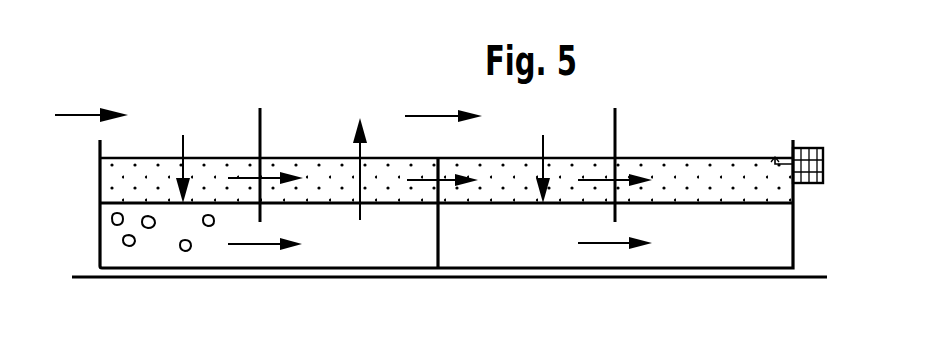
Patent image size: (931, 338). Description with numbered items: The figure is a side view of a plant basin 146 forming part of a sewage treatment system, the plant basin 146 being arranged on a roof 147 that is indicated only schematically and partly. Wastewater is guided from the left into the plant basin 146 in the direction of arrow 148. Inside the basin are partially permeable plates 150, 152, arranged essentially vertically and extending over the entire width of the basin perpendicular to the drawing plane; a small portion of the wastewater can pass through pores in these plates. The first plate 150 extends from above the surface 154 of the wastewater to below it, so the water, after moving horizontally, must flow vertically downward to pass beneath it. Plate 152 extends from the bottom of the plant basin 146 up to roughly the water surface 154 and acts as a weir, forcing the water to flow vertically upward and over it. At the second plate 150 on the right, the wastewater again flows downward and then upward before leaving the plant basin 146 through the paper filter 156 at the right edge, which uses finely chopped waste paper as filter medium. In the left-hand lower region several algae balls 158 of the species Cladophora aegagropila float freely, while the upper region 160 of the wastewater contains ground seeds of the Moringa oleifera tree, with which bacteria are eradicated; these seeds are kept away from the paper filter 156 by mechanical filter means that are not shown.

The plant basin 146 is at (800, 253).
The roof 147 is at (298, 280).
The arrow 148 is at (68, 117).
The partially permeable plates 150 is at (262, 122).
The partially permeable plate 152 is at (435, 247).
The surface of the wastewater 154 is at (138, 158).
The paper filter 156 is at (810, 150).
The algae balls 158 is at (183, 250).
The upper region 160 is at (98, 180).